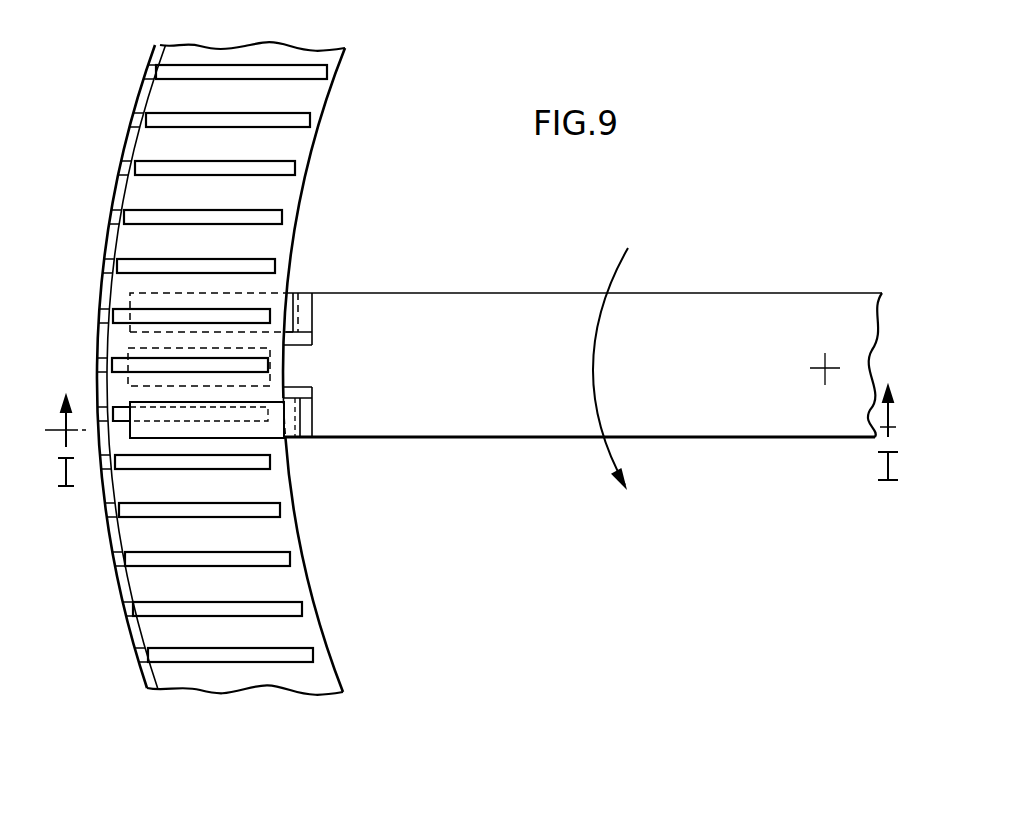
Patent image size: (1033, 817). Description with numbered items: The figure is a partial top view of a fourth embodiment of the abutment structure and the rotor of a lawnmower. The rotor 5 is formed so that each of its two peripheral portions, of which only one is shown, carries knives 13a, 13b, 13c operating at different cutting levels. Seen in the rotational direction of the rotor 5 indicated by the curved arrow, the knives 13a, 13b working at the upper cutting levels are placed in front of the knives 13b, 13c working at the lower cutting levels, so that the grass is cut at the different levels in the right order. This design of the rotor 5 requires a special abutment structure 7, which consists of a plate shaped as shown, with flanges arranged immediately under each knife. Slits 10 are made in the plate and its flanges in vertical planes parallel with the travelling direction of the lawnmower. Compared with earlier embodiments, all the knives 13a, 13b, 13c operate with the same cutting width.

The rotor 5 is at (435, 326).
The abutment structure 7 is at (298, 143).
The slits 10 is at (264, 510).
The knife 13a is at (198, 428).
The knife 13b is at (128, 384).
The knife 13c is at (186, 297).